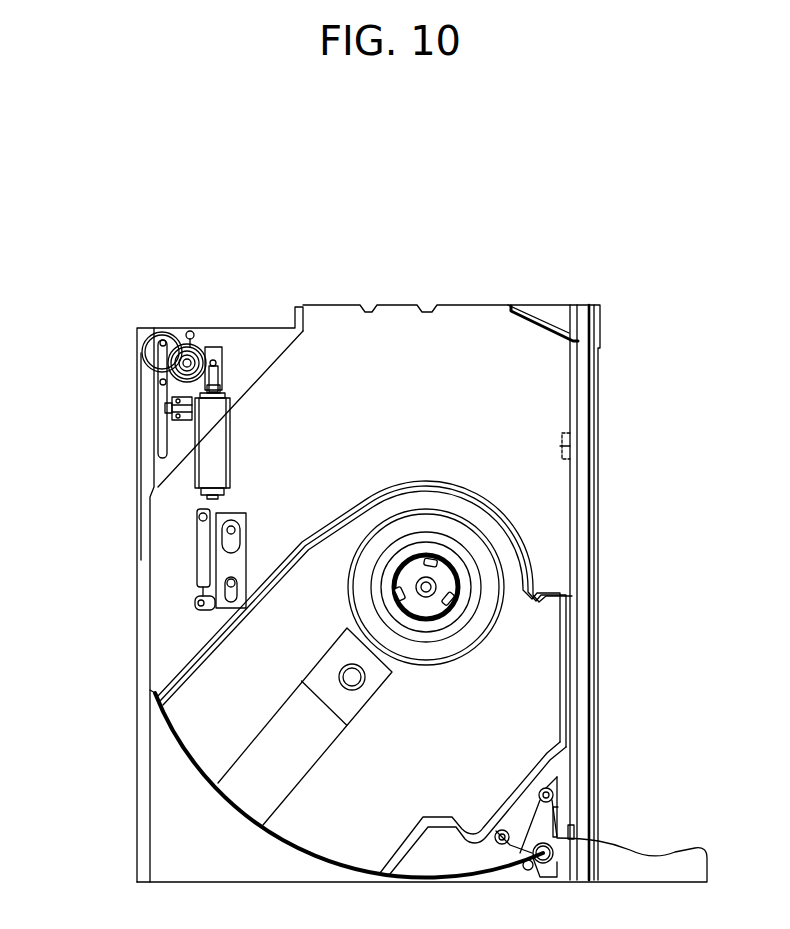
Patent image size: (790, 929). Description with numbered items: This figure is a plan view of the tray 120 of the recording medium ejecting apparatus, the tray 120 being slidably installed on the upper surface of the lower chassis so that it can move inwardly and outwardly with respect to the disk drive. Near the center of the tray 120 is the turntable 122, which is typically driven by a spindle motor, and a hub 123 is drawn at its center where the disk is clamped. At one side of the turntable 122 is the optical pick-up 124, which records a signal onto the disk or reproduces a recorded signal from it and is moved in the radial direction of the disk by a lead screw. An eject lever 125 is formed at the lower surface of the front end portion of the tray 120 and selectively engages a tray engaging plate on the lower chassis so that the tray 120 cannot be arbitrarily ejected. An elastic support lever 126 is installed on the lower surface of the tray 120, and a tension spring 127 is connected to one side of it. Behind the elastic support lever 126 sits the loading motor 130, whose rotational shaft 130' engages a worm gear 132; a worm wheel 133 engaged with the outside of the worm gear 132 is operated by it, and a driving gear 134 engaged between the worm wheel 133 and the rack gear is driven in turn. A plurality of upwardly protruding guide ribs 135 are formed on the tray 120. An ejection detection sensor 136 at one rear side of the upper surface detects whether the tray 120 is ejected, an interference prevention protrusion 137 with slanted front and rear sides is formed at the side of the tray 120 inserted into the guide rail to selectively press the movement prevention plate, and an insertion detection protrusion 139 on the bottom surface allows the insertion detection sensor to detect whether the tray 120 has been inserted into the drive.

The tray 120 is at (656, 388).
The turntable 122 is at (428, 547).
The spindle hub 123 is at (458, 603).
The optical pick-up 124 is at (322, 673).
The eject lever 125 is at (561, 818).
The elastic support lever 126 is at (233, 567).
The tension spring 127 is at (200, 548).
The loading motor 130 is at (267, 446).
The rotational shaft 130' is at (267, 386).
The worm gear 132 is at (222, 349).
The worm wheel 133 is at (195, 358).
The driving gear 134 is at (163, 337).
The guide ribs 135 is at (189, 331).
The ejection detection sensor 136 is at (163, 406).
The interference prevention protrusion 137 is at (150, 470).
The insertion detection protrusion 139 is at (568, 446).